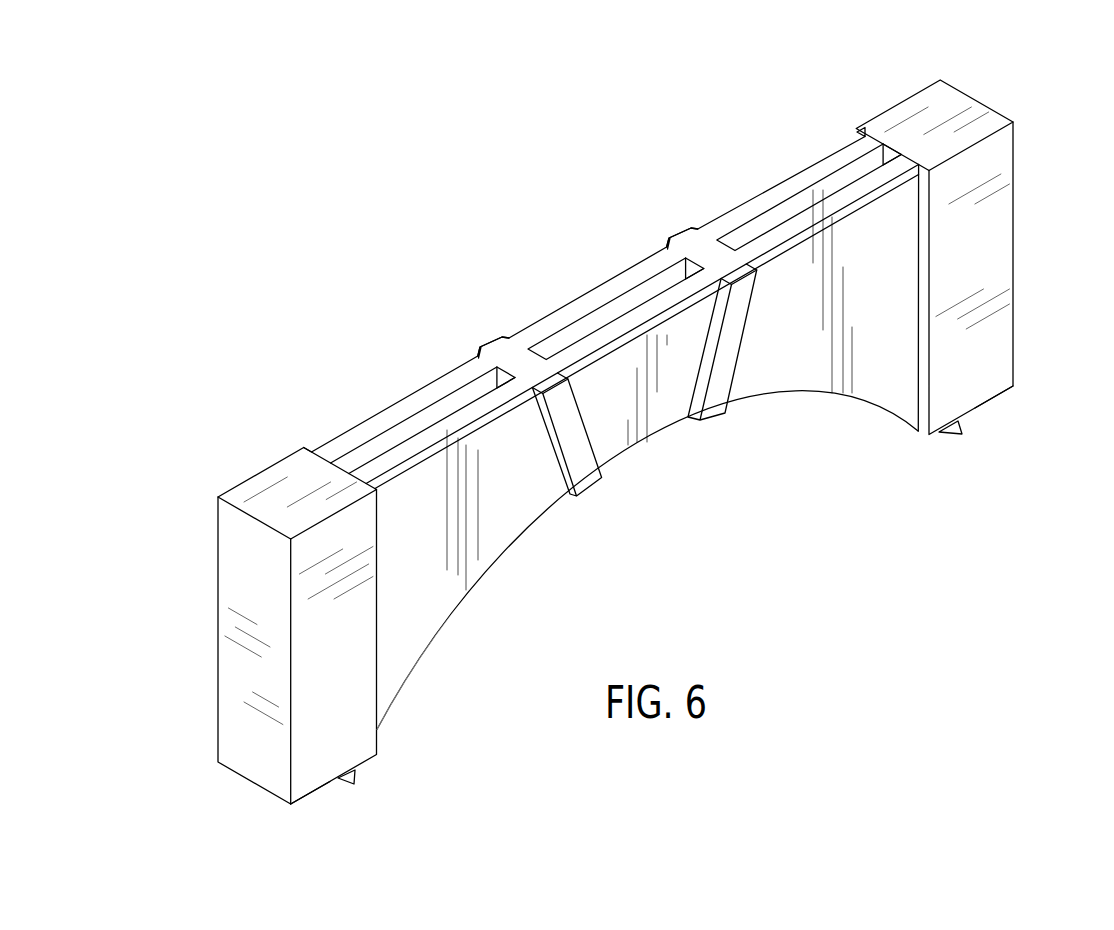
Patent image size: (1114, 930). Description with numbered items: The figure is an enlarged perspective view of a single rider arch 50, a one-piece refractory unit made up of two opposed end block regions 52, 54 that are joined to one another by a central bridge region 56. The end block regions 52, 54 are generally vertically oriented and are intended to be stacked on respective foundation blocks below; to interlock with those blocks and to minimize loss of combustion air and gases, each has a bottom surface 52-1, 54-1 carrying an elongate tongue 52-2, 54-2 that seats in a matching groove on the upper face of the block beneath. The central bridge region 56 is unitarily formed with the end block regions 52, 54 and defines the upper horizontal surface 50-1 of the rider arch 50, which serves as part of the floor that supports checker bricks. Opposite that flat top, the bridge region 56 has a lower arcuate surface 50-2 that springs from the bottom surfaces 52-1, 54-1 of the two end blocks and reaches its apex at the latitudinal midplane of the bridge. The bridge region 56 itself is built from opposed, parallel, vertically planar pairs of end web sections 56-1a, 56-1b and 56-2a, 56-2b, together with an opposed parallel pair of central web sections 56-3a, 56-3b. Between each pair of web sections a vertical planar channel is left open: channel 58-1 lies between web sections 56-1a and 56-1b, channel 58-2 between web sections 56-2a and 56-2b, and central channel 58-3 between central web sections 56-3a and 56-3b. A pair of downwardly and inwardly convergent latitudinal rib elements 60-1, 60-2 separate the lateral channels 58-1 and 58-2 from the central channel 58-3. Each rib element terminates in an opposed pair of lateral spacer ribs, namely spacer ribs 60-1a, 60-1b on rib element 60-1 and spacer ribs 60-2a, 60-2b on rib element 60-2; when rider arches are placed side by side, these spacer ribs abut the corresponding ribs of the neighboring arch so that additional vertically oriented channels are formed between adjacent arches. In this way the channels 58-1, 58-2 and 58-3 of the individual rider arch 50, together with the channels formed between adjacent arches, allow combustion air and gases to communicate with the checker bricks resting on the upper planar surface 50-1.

The rider arch 50 is at (402, 183).
The upper horizontal surface 50-1 is at (870, 136).
The lower arcuate surface 50-2 is at (455, 611).
The end block region 52 is at (991, 209).
The bottom surface 52-1 is at (990, 400).
The elongate tongue 52-2 is at (955, 433).
The end block region 54 is at (346, 704).
The bottom surface 54-1 is at (307, 794).
The elongate tongue 54-2 is at (358, 777).
The central bridge region 56 is at (781, 360).
The end web section 56-1a is at (912, 287).
The end web section 56-1b is at (809, 136).
The end web section 56-2a is at (445, 532).
The end web section 56-2b is at (408, 382).
The central web section 56-3a is at (620, 397).
The central web section 56-3b is at (616, 245).
The vertical planar channel 58-1 is at (776, 216).
The vertical planar channel 58-2 is at (410, 421).
The central channel 58-3 is at (584, 330).
The latitudinal rib element 60-1 is at (701, 320).
The lateral spacer rib 60-1a is at (709, 425).
The lateral spacer rib 60-1b is at (669, 240).
The latitudinal rib element 60-2 is at (542, 408).
The lateral spacer rib 60-2a is at (582, 472).
The lateral spacer rib 60-2b is at (484, 335).